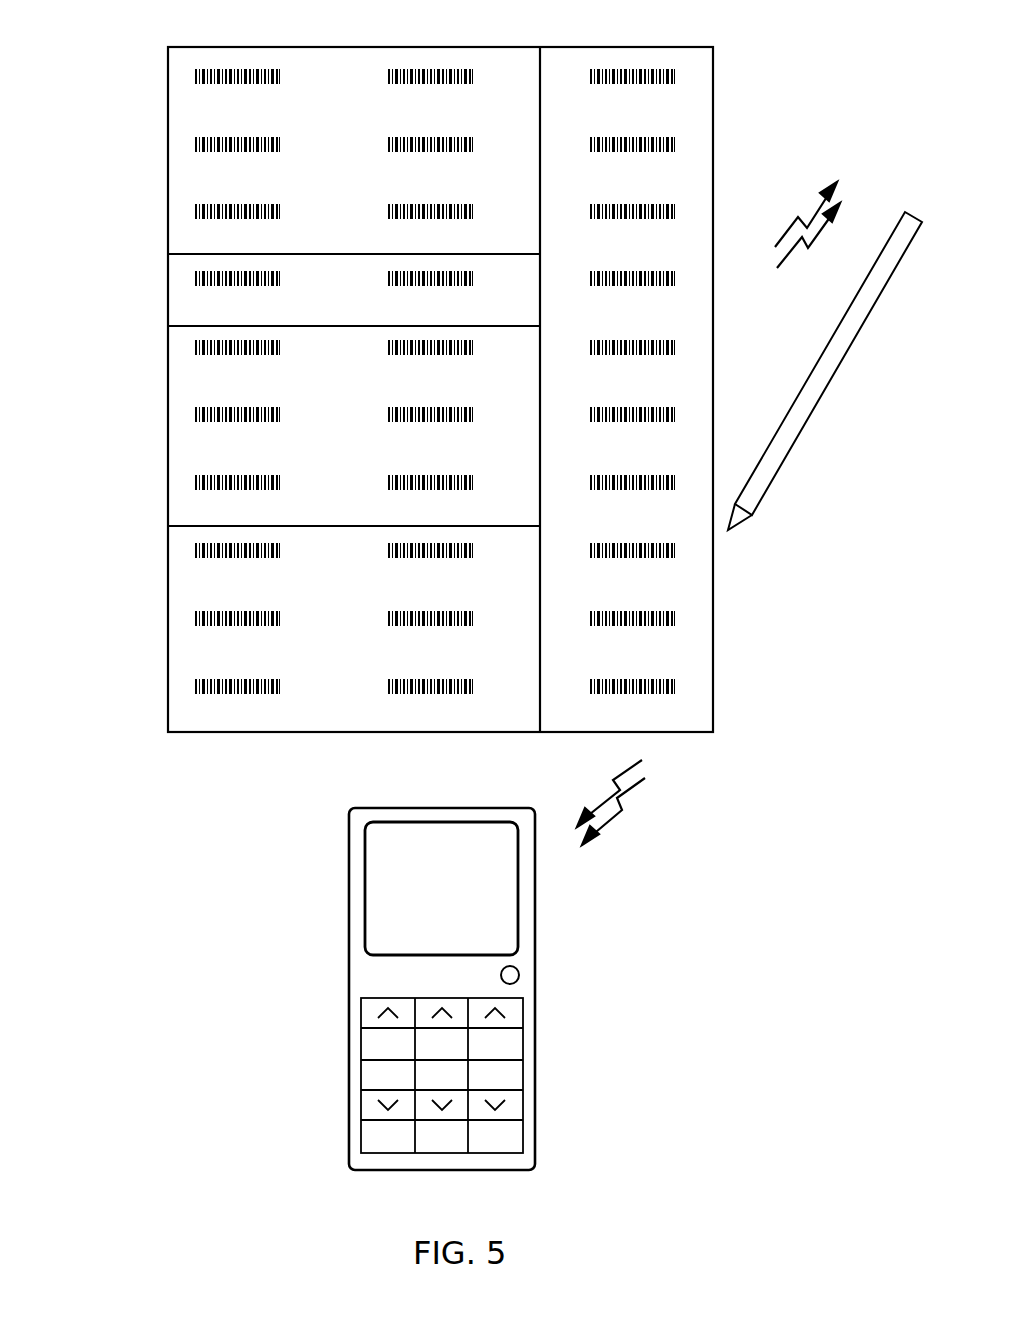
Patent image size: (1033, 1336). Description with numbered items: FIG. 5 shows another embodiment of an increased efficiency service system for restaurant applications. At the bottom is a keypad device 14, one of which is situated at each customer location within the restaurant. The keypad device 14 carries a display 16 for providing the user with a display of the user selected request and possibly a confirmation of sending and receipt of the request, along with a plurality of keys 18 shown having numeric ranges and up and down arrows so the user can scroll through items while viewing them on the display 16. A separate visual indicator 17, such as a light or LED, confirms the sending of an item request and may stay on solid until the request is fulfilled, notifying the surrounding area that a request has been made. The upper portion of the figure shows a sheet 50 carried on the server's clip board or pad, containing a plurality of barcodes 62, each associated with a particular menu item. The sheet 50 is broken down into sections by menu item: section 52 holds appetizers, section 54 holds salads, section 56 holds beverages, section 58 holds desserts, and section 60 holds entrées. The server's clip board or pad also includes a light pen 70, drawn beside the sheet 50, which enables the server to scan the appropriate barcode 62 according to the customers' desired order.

The sheet 50 is at (427, 366).
The appetizers section 52 is at (303, 127).
The salads section 54 is at (168, 285).
The beverages section 56 is at (168, 385).
The desserts section 58 is at (168, 593).
The entrées section 60 is at (713, 598).
The barcode 62 is at (430, 67).
The light pen 70 is at (827, 368).
The keypad device 14 is at (487, 989).
The display 16 is at (508, 920).
The visual indicator 17 is at (518, 967).
The keys 18 is at (520, 1050).